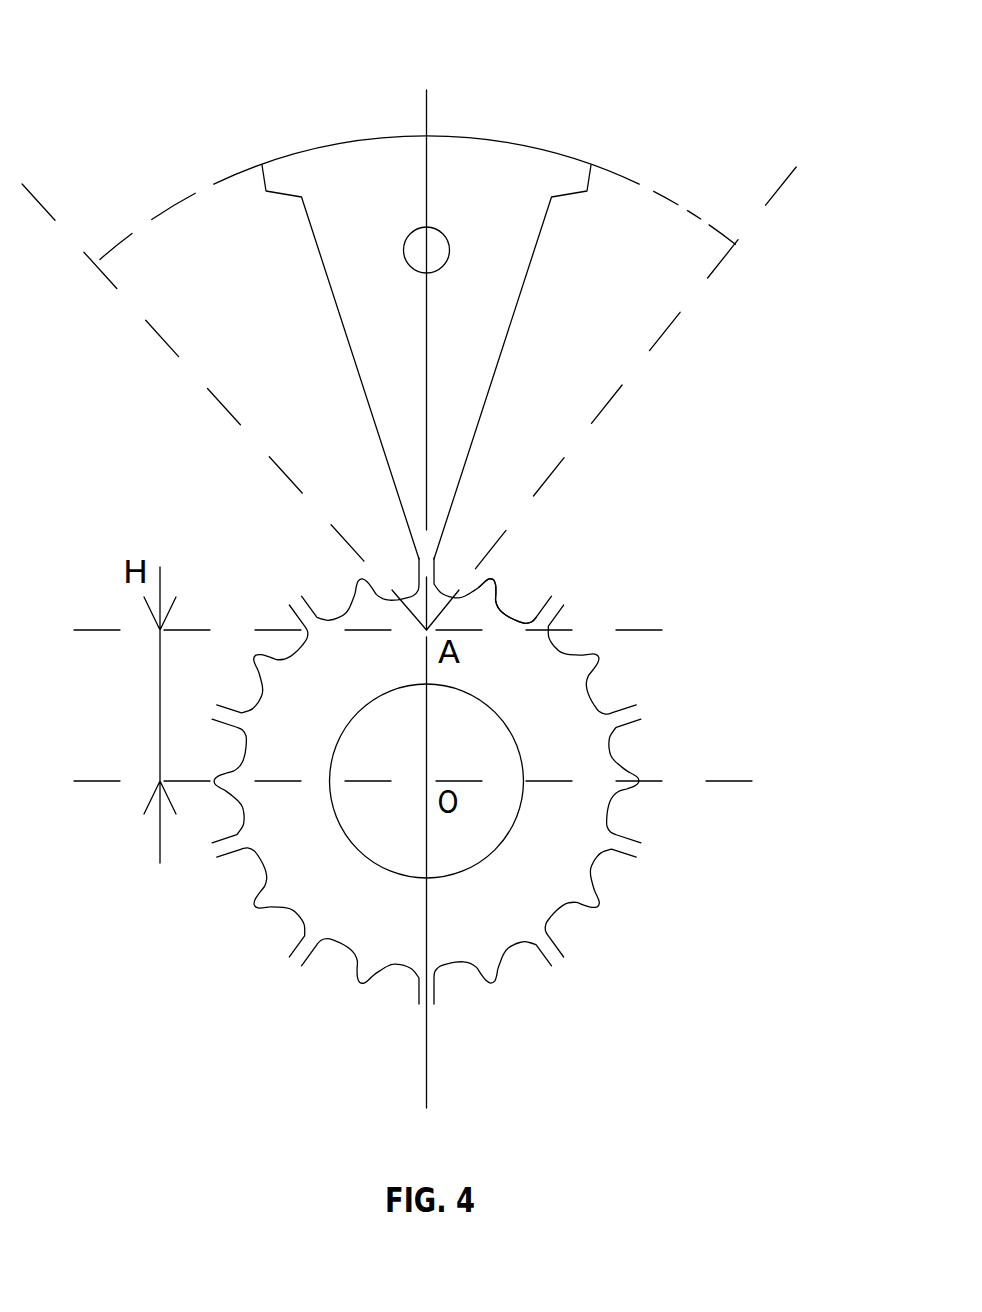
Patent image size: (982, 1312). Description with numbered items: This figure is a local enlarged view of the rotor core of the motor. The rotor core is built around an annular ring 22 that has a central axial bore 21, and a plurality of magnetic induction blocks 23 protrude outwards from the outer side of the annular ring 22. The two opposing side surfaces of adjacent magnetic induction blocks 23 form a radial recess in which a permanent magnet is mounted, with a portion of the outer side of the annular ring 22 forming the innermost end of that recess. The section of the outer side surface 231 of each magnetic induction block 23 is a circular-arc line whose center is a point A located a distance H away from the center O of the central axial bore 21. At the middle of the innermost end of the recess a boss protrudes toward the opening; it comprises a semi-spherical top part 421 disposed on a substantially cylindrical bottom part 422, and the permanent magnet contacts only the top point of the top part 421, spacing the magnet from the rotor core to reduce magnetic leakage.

The outer side surface 231 is at (345, 142).
The magnetic induction block 23 is at (392, 357).
The annular ring 22 is at (487, 910).
The central axial bore 21 is at (389, 813).
The top part 421 is at (497, 584).
The bottom part 422 is at (498, 594).